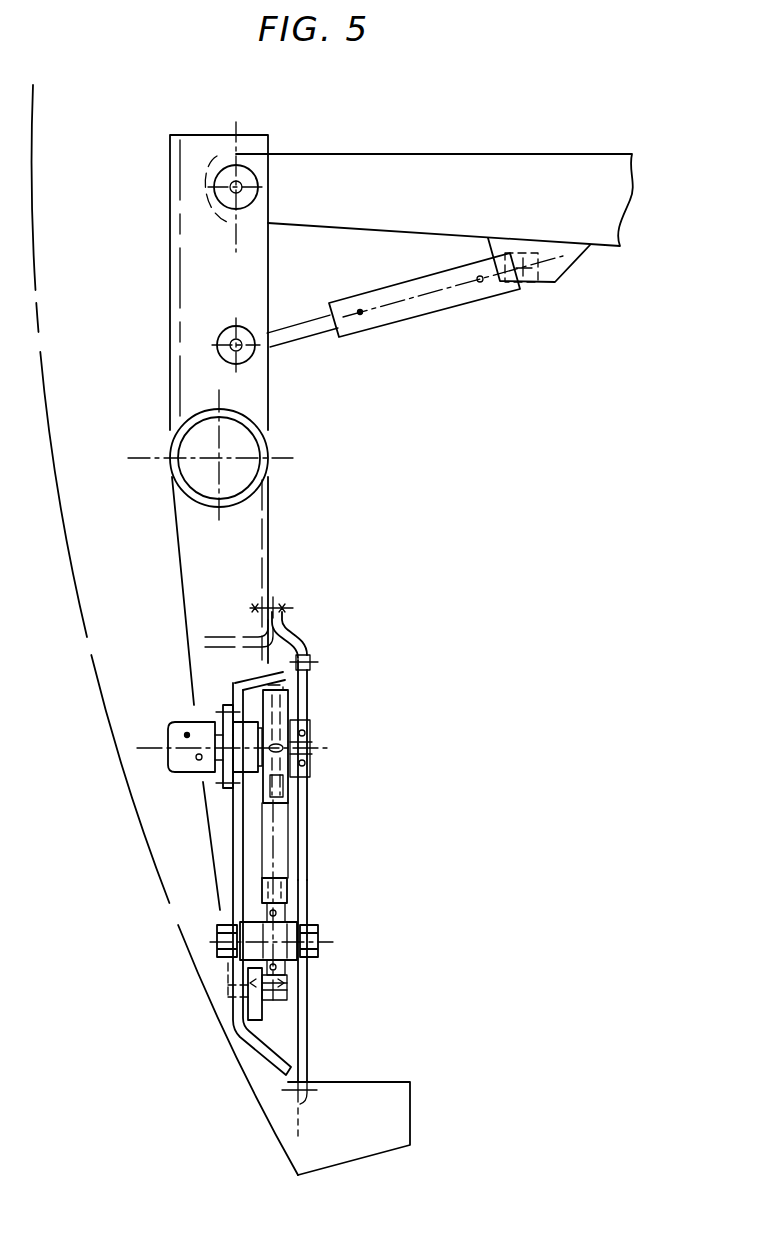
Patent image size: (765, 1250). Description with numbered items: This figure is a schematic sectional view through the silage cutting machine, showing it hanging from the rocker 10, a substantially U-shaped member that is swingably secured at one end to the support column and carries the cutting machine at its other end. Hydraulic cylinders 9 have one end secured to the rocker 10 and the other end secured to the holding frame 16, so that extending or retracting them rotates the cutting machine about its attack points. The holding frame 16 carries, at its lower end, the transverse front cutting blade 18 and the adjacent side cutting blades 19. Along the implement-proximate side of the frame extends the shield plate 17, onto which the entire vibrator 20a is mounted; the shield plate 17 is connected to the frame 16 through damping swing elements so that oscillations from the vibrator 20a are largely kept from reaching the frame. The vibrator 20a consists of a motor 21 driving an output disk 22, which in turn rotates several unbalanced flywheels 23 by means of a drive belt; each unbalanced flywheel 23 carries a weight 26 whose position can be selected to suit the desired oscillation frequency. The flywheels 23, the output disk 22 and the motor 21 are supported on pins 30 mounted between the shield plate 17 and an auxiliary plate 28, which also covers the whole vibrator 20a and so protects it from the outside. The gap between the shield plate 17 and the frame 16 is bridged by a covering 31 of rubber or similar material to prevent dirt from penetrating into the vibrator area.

The hydraulic cylinder 9 is at (435, 307).
The rocker 10 is at (393, 176).
The holding frame 16 is at (184, 555).
The shield plate 17 is at (307, 987).
The transverse front cutting blade 18 is at (307, 1023).
The side cutting blade 19 is at (353, 1127).
The vibrator 20a is at (286, 835).
The motor 21 is at (193, 730).
The output disk 22 is at (284, 703).
The unbalanced flywheel 23 is at (281, 915).
The weight 26 is at (257, 1007).
The auxiliary plate 28 is at (238, 817).
The pin 30 is at (248, 930).
The covering 31 is at (307, 634).